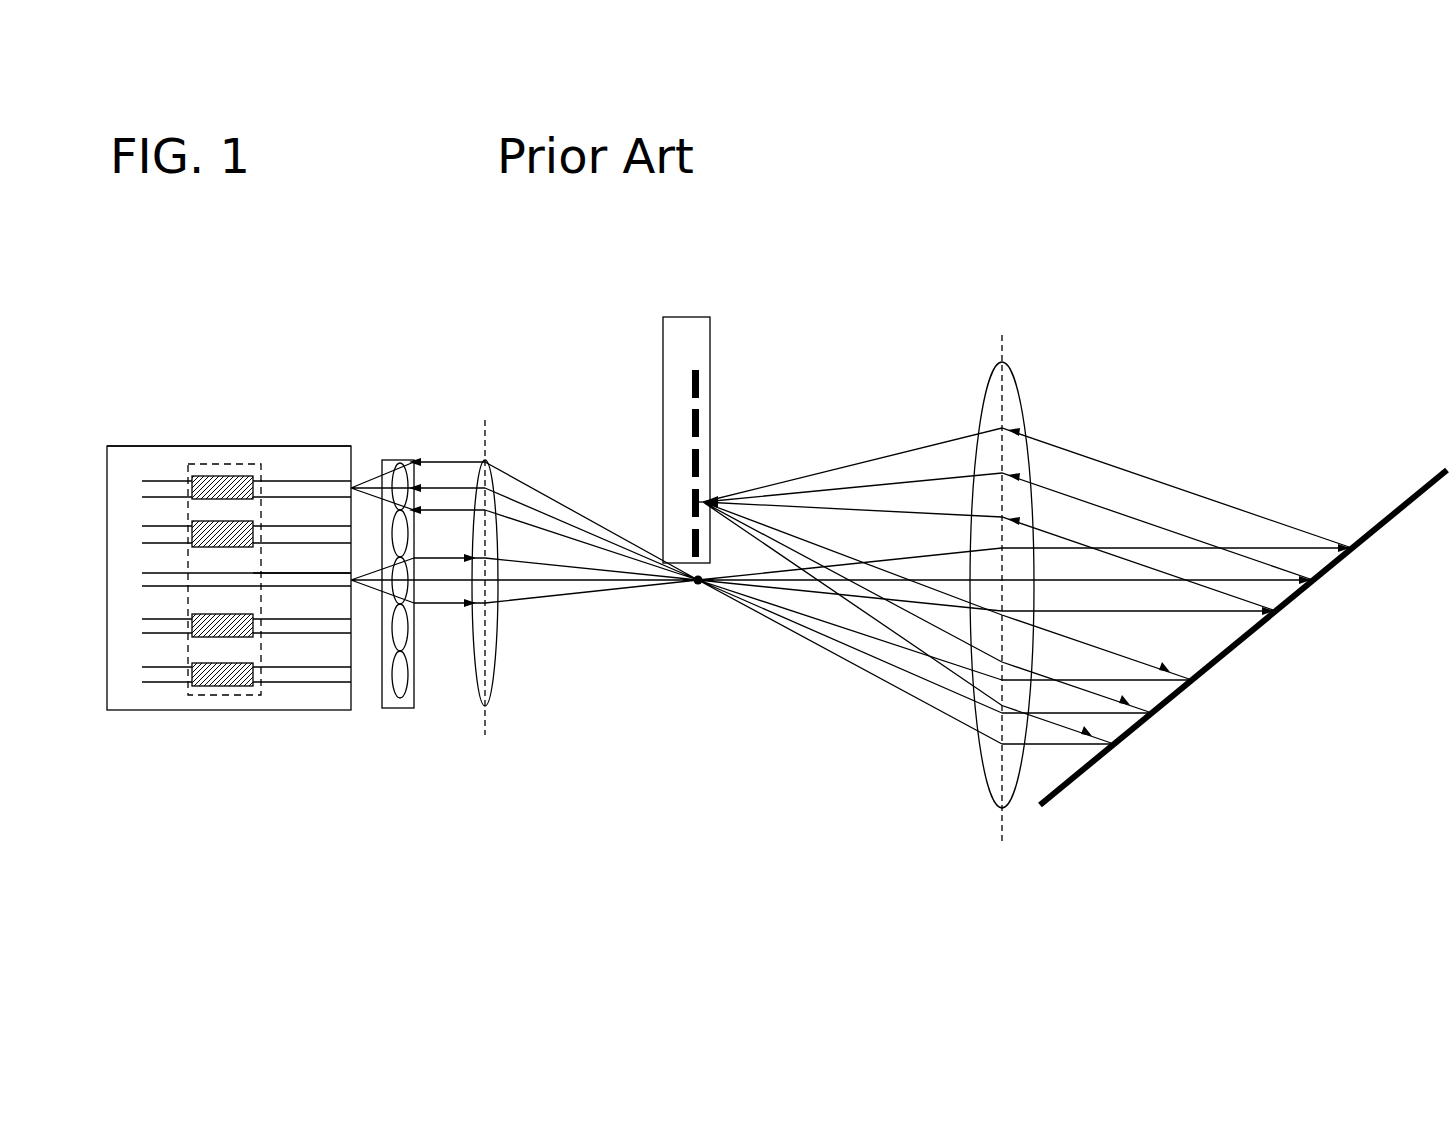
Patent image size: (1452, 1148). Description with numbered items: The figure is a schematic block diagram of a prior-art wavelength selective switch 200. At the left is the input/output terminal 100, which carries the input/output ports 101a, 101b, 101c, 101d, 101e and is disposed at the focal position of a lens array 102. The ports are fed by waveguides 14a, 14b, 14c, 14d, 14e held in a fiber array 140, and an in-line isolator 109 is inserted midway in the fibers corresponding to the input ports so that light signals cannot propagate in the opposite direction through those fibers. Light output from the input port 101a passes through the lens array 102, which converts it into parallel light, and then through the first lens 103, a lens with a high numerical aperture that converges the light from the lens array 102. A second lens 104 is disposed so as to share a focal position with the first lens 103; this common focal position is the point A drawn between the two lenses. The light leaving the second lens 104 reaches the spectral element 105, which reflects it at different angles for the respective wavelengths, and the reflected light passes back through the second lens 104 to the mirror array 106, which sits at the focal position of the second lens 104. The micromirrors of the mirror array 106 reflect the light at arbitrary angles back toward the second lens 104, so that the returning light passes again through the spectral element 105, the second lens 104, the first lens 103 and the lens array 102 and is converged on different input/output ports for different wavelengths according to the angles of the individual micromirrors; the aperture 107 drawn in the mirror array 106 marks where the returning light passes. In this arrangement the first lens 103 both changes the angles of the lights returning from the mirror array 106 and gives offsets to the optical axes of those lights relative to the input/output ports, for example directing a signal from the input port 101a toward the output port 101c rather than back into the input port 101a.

The wavelength selective switch 200 is at (894, 240).
The input/output terminal 100 is at (351, 712).
The fiber array 140 is at (327, 446).
The in-line isolator 109 is at (222, 698).
The waveguide 14a is at (165, 481).
The waveguide 14b is at (165, 526).
The waveguide 14c is at (165, 573).
The waveguide 14d is at (165, 619).
The waveguide 14e is at (165, 667).
The input port 101a is at (343, 481).
The input/output port 101b is at (343, 526).
The output port 101c is at (343, 573).
The input/output port 101d is at (343, 619).
The input/output port 101e is at (343, 667).
The lens array 102 is at (400, 460).
The first lens 103 is at (485, 461).
The second lens 104 is at (1001, 364).
The spectral element 105 is at (1428, 486).
The mirror array 106 is at (677, 317).
The aperture 107 is at (706, 499).
The focal point A is at (702, 588).